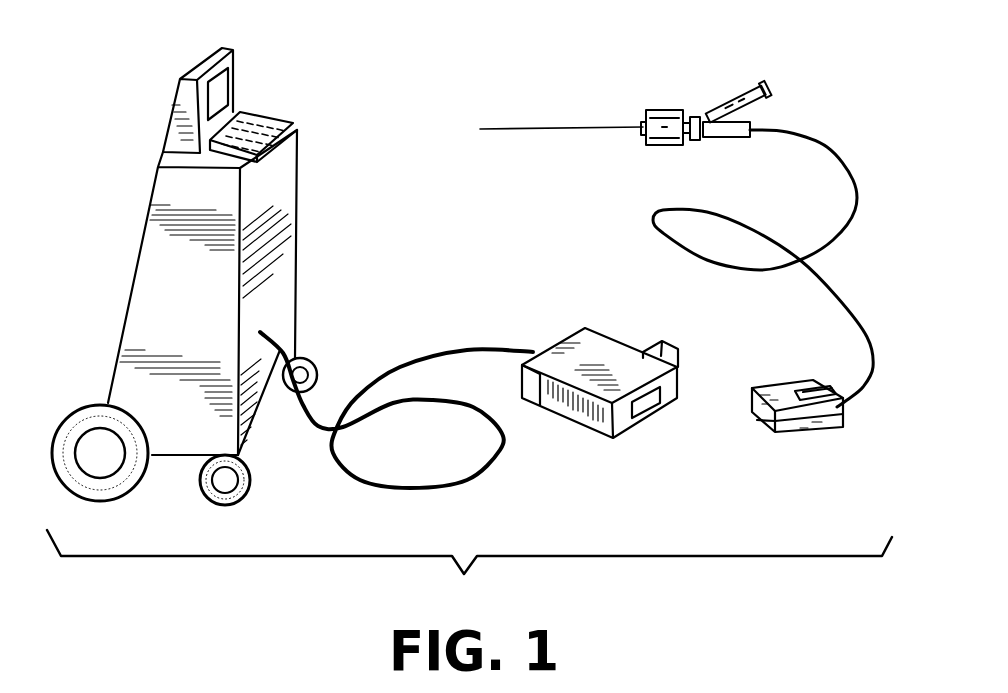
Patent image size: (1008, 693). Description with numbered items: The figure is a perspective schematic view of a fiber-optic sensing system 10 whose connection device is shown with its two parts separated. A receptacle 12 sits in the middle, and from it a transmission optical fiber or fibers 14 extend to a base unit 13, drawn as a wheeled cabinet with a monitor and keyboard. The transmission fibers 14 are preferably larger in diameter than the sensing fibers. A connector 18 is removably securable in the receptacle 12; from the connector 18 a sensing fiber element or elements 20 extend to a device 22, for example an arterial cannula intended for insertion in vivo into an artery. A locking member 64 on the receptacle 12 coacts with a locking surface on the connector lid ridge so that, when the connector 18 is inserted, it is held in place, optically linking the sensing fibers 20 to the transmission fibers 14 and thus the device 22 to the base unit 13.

The system 10 is at (302, 472).
The receptacle 12 is at (612, 348).
The base unit 13 is at (287, 255).
The transmission optical fibers 14 is at (470, 350).
The connector 18 is at (793, 387).
The sensing fiber elements 20 is at (853, 313).
The device 22 is at (727, 100).
The locking member 64 is at (665, 345).